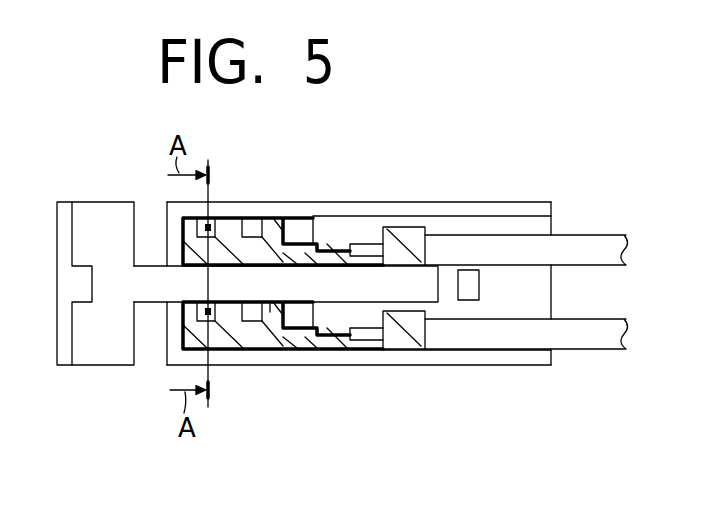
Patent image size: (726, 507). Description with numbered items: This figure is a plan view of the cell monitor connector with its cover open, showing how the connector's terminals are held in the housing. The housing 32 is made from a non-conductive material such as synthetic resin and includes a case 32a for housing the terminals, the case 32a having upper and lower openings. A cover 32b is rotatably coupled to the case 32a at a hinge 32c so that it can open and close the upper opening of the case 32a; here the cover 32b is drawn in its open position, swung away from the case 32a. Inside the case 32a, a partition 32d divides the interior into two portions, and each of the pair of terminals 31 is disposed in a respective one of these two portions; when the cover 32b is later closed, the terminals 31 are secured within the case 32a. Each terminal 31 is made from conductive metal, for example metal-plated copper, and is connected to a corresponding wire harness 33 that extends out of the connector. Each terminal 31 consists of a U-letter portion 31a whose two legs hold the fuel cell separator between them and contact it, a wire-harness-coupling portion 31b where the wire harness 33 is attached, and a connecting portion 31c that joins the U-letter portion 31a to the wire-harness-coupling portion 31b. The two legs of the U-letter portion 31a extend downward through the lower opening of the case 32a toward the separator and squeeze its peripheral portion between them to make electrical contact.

The terminal 31 is at (325, 298).
The U-letter portion 31a is at (193, 330).
The wire-harness-coupling portion 31b is at (415, 245).
The connecting portion 31c is at (335, 337).
The housing 32 is at (376, 366).
The case 32a is at (396, 202).
The cover 32b is at (98, 202).
The hinge 32c is at (152, 282).
The partition 32d is at (364, 278).
The wire harness 33 is at (568, 328).